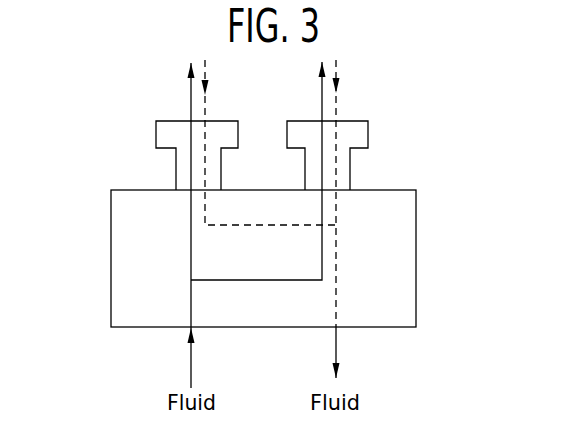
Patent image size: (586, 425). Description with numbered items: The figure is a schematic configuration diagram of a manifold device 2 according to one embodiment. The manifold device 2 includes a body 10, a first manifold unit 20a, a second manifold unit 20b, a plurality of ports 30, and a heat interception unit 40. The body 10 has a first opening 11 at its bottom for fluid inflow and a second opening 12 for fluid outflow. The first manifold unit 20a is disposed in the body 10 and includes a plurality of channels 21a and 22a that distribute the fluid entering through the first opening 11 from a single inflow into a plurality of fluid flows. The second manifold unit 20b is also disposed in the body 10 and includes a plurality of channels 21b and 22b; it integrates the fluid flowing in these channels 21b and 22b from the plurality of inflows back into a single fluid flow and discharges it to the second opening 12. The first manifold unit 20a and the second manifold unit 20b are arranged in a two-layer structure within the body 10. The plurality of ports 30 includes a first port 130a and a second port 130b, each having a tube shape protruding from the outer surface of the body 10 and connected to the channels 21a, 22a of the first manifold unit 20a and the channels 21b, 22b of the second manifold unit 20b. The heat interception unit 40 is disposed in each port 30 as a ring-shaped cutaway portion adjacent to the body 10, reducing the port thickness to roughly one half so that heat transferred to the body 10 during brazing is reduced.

The manifold device 2 is at (107, 80).
The body 10 is at (120, 327).
The first opening 11 is at (188, 328).
The second opening 12 is at (332, 328).
The first manifold unit 20a is at (192, 263).
The second manifold unit 20b is at (337, 268).
The channel 21a is at (192, 241).
The channel 21b is at (205, 213).
The channel 22a is at (322, 248).
The channel 22b is at (336, 211).
The port 30 is at (158, 136).
The heat interception unit 40 is at (362, 168).
The first port 130a is at (228, 121).
The second port 130b is at (358, 121).